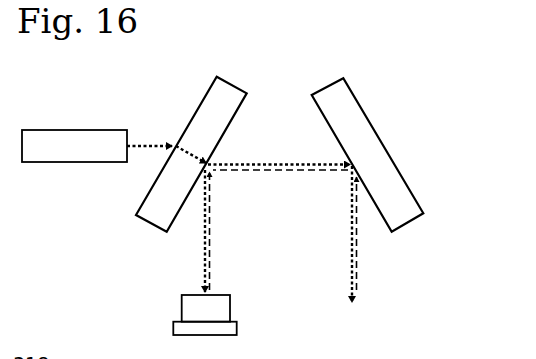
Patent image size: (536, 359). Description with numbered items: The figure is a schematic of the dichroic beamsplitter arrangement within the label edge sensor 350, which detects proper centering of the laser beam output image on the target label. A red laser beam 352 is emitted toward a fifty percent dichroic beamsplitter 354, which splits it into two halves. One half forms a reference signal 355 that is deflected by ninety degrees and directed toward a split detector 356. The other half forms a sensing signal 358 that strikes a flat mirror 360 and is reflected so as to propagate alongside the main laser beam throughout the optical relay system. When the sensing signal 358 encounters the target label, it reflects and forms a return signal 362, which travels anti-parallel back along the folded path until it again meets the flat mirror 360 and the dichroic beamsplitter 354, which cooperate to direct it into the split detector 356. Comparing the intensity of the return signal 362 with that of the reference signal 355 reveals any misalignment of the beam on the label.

The label edge sensor 350 is at (374, 44).
The red laser beam 352 is at (143, 144).
The dichroic beamsplitter 354 is at (210, 88).
The reference signal 355 is at (212, 233).
The split detector 356 is at (218, 295).
The sensing signal 358 is at (291, 162).
The flat mirror 360 is at (367, 115).
The return signal 362 is at (277, 172).